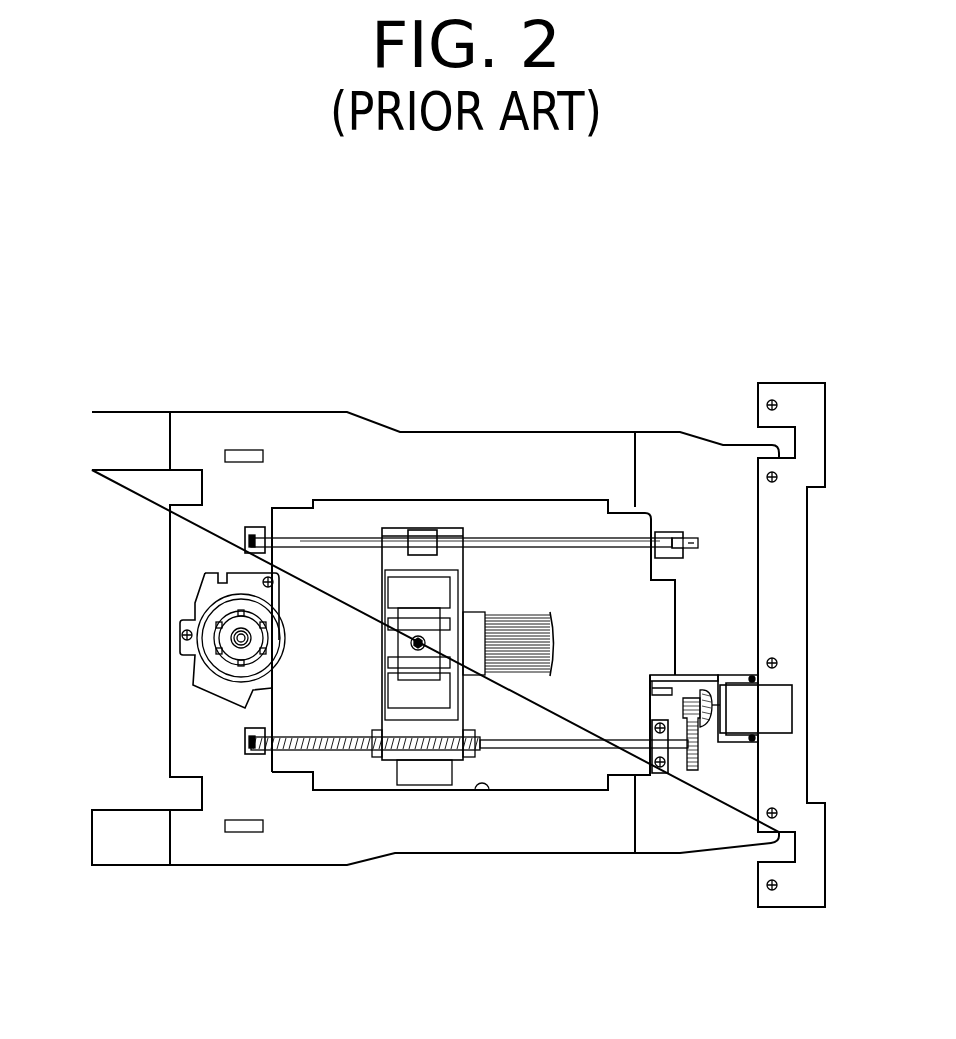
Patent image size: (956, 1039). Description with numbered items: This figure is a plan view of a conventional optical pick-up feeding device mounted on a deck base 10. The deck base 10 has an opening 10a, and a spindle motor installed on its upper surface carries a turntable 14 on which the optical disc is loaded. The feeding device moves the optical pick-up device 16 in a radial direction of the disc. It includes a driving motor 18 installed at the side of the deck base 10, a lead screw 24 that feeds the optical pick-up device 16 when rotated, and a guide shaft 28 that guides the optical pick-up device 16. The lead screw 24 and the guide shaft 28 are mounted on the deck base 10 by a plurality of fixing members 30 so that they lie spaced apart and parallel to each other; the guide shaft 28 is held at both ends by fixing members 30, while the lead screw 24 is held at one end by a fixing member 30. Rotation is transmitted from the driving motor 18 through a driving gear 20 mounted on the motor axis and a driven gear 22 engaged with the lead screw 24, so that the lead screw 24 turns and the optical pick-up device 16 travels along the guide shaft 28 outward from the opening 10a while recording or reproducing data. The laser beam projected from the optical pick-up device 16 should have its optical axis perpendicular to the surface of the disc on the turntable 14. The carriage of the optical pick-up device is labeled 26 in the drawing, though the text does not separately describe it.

The deck base 10 is at (591, 835).
The opening 10a is at (487, 800).
The turntable 14 is at (208, 618).
The optical pick-up device 16 is at (473, 525).
The driving motor 18 is at (786, 705).
The driving gear 20 is at (698, 690).
The driven gear 22 is at (690, 775).
The lead screw 24 is at (425, 755).
The optical pickup 26 is at (450, 556).
The guide shaft 28 is at (341, 540).
The fixing member 30 is at (255, 527).